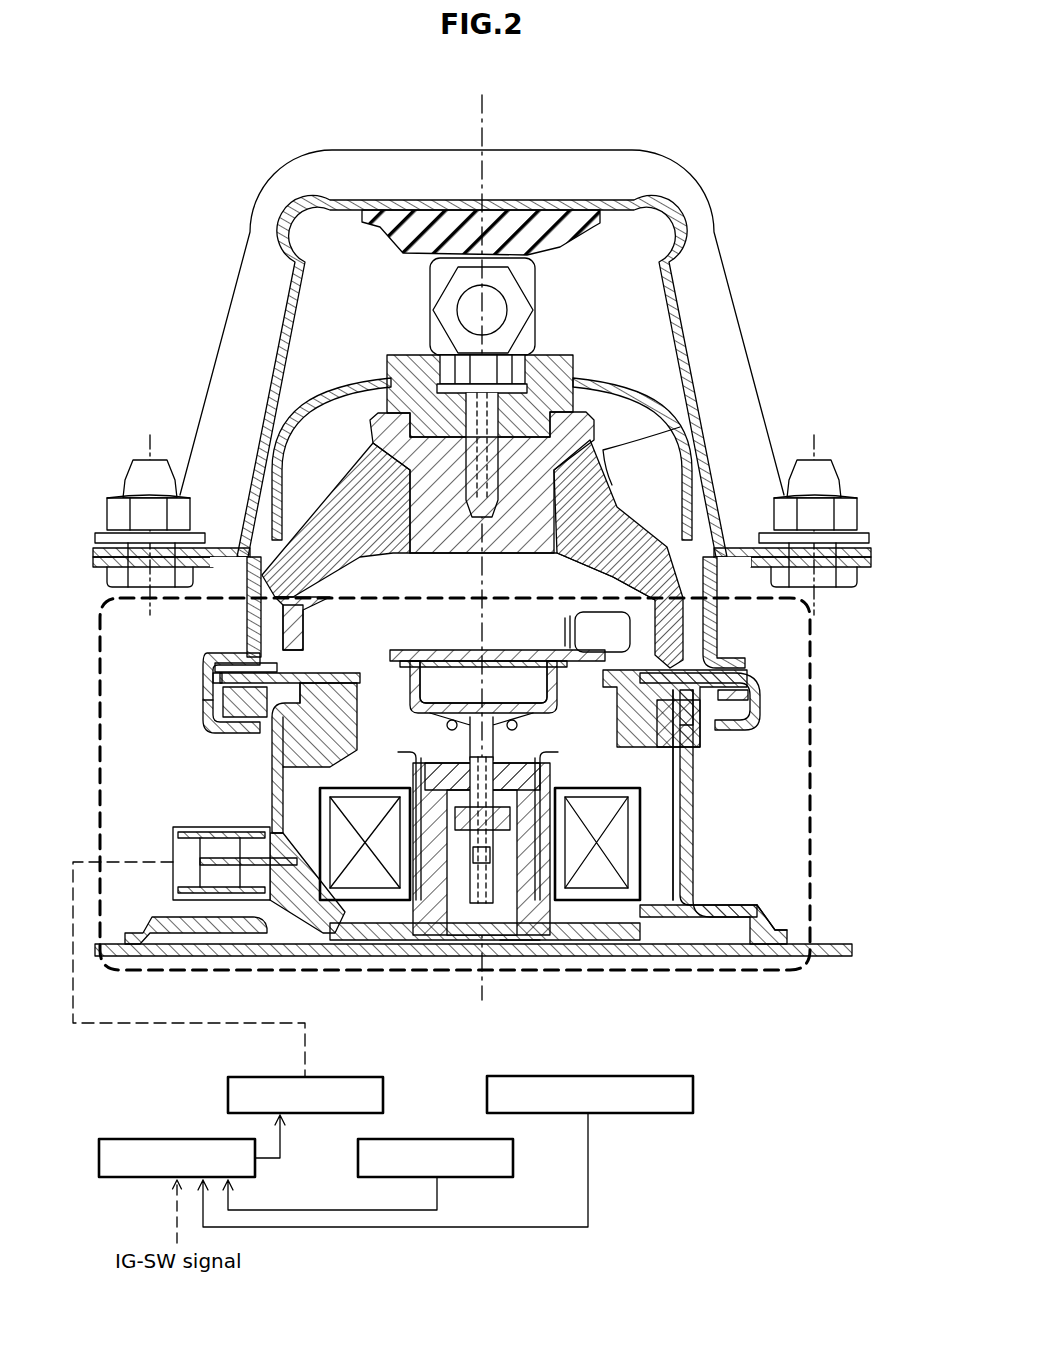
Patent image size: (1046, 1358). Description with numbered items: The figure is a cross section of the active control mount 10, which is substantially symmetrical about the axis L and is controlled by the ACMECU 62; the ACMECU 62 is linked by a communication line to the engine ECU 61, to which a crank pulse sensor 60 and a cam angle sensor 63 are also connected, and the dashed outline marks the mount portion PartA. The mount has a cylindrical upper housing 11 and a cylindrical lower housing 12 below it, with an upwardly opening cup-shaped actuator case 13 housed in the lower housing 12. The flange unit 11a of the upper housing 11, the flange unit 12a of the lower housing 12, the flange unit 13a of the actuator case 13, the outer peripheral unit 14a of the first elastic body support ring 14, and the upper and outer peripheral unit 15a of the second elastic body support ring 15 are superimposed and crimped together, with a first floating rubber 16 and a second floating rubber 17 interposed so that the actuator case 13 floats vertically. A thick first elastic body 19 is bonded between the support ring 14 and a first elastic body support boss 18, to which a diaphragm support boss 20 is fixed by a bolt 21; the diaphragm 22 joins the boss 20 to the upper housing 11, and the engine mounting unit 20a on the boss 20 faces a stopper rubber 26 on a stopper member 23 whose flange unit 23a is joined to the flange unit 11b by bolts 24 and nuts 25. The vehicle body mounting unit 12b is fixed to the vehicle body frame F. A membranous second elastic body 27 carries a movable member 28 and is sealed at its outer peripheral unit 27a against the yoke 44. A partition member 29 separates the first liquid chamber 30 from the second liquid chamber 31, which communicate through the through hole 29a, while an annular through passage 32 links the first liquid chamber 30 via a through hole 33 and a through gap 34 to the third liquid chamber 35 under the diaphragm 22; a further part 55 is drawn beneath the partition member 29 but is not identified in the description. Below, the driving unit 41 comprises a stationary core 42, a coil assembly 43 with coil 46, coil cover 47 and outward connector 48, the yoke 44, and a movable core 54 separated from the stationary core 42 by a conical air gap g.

The active control mount (ACM) 10 is at (731, 120).
The upper housing 11 is at (222, 644).
The flange unit 11a is at (203, 708).
The flange unit 11b is at (100, 562).
The lower housing 12 is at (708, 812).
The flange unit 12a is at (728, 720).
The vehicle body mounting unit 12b is at (760, 915).
The actuator case 13 is at (694, 869).
The flange unit 13a is at (748, 695).
The first elastic body support ring 14 is at (303, 625).
The outer peripheral unit 14a is at (228, 664).
The second elastic body support ring 15 is at (350, 673).
The upper and outer peripheral unit 15a is at (214, 690).
The first floating rubber 16 is at (245, 717).
The second floating rubber 17 is at (676, 750).
The first elastic body support boss 18 is at (472, 540).
The first elastic body 19 is at (600, 447).
The diaphragm support boss 20 is at (570, 354).
The engine mounting unit 20a is at (535, 270).
The bolt 21 is at (445, 365).
The diaphragm 22 is at (335, 385).
The stopper member 23 is at (283, 271).
The flange unit 23a is at (93, 548).
The bolt 24 is at (128, 585).
The nut 25 is at (122, 492).
The stopper rubber 26 is at (403, 253).
The second elastic body 27 is at (653, 630).
The outer peripheral unit 27a is at (290, 762).
The movable member 28 is at (423, 665).
The partition member 29 is at (455, 636).
The through hole 29a is at (470, 657).
The first liquid chamber 30 is at (532, 575).
The second liquid chamber 31 is at (393, 652).
The through passage 32 is at (247, 626).
The through hole 33 is at (712, 638).
The through gap 34 is at (648, 535).
The third liquid chamber 35 is at (315, 430).
The driving unit 41 is at (254, 802).
The stationary core 42 is at (527, 940).
The coil assembly 43 is at (633, 940).
The yoke 44 is at (660, 785).
The coil 46 is at (365, 844).
The coil cover 47 is at (640, 835).
The connector 48 is at (175, 828).
The movable core 54 is at (385, 943).
The orifice stem 55 is at (495, 720).
The crank pulse sensor 60 is at (693, 1093).
The engine ECU 61 is at (140, 1139).
The ACMECU 62 is at (340, 1077).
The cam angle sensor 63 is at (513, 1148).
The air gap g is at (425, 945).
The vehicle body frame F is at (832, 943).
The axis L is at (500, 120).
The Part A PartA is at (780, 990).